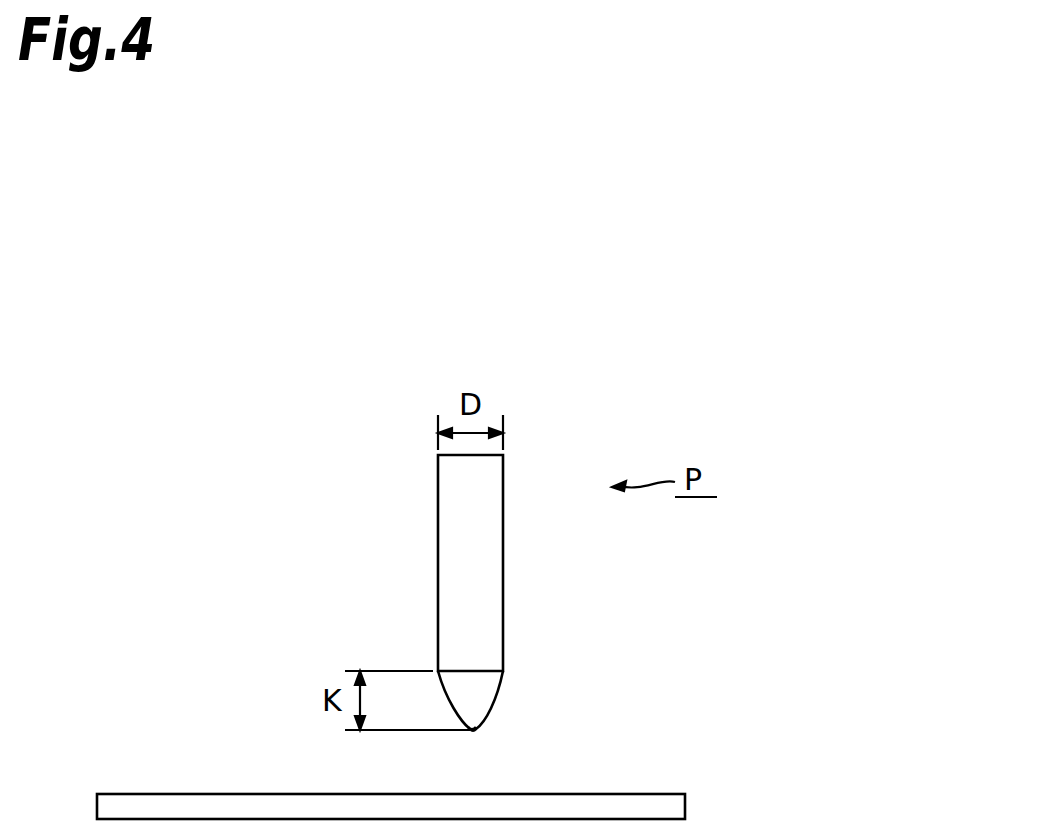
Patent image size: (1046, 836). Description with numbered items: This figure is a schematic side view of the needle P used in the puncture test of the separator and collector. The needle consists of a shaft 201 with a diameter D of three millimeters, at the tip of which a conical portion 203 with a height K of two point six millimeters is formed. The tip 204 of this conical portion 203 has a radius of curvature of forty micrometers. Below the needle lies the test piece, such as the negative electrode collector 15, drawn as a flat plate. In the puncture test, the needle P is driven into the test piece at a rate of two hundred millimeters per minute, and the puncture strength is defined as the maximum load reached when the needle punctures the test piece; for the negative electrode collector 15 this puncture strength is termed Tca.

The shaft 201 is at (490, 560).
The conical portion 203 is at (482, 688).
The tip 204 is at (472, 730).
The negative electrode collector 15 is at (678, 802).